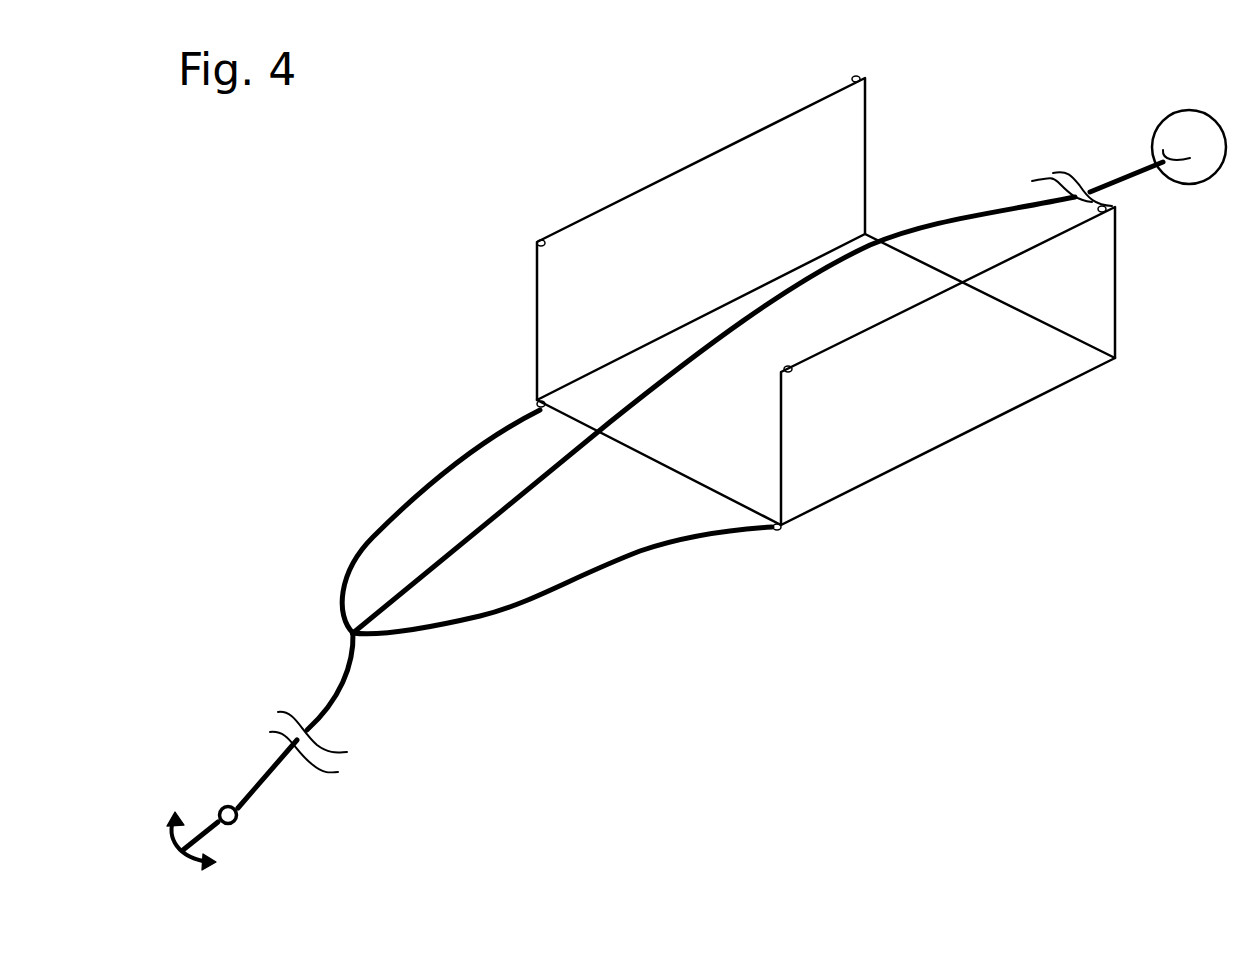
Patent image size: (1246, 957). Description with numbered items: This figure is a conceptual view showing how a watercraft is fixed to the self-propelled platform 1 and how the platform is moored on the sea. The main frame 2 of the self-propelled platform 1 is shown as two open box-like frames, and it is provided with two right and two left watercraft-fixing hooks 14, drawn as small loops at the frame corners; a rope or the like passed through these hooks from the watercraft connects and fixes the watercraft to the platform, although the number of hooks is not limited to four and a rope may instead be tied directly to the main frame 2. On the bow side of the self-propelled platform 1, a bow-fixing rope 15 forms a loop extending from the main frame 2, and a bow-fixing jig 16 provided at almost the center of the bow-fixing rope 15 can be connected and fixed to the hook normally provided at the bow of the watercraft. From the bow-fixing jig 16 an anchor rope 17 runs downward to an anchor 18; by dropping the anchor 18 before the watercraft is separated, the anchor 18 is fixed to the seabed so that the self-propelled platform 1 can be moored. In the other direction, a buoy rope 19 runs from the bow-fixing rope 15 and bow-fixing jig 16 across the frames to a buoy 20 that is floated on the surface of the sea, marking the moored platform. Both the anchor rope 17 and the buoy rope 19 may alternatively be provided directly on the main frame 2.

The self-propelled platform 1 is at (1134, 316).
The main frame 2 is at (862, 147).
The watercraft-fixing hook 14 is at (853, 77).
The bow-fixing rope 15 is at (552, 595).
The bow-fixing jig 16 is at (357, 617).
The anchor rope 17 is at (263, 775).
The anchor 18 is at (240, 818).
The buoy rope 19 is at (921, 227).
The buoy 20 is at (1157, 127).